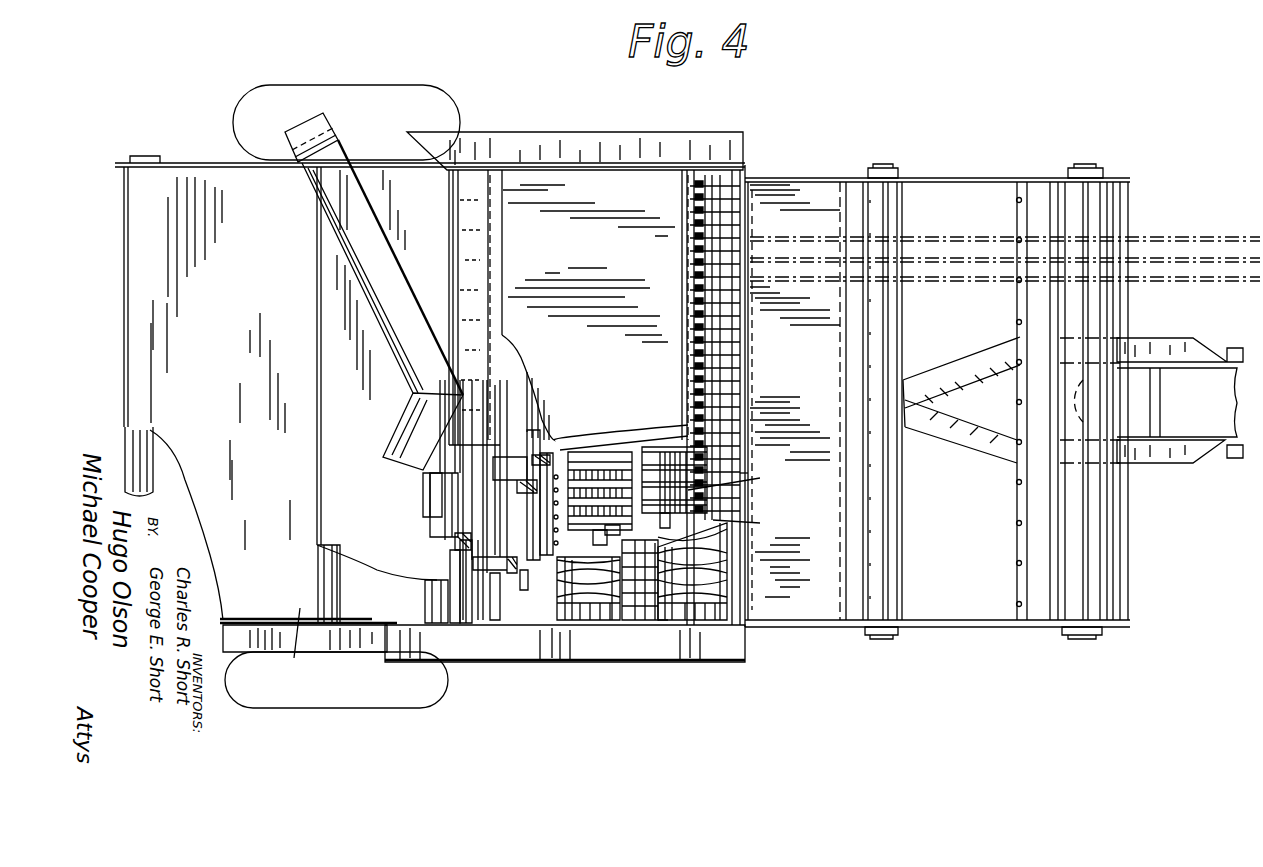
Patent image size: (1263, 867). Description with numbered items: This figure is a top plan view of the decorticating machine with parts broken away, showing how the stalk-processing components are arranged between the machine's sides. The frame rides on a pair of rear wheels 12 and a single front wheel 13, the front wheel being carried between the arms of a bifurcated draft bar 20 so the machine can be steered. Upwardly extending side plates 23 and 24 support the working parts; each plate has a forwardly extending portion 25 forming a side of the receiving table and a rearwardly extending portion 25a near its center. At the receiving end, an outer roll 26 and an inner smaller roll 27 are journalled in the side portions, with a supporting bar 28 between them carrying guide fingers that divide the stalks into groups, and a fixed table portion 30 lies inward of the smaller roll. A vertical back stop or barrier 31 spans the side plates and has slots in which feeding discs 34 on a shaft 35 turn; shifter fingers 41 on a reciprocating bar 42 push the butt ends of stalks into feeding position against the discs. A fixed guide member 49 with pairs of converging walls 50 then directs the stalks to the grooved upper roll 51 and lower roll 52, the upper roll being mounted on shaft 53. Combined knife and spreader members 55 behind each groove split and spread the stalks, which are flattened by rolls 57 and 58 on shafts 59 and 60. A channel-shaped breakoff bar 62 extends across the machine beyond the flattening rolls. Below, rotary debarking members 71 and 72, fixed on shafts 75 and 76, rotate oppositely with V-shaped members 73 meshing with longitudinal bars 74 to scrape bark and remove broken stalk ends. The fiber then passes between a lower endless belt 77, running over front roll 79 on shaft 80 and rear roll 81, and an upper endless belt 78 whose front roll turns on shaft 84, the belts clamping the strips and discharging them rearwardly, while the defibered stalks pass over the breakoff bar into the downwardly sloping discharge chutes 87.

The rear wheels 12 is at (393, 105).
The front wheel 13 is at (1212, 438).
The bifurcated draft bar 20 is at (1183, 346).
The side frame member or plate 23 is at (722, 625).
The side frame member or plate 24 is at (703, 170).
The forwardly extending portion 25 is at (958, 178).
The rearwardly extending portion 25a is at (188, 162).
The outer roll 26 is at (1100, 514).
The inner smaller roll 27 is at (885, 528).
The supporting bar 28 is at (1017, 578).
The fixed table portion 30 is at (822, 623).
The back stop or barrier 31 is at (745, 473).
The feeding discs 34 is at (745, 497).
The shaft 35 is at (745, 515).
The shifter fingers 41 is at (745, 327).
The bar 42 is at (745, 220).
The fixed guide member 49 is at (650, 623).
The converging walls 50 is at (632, 600).
The upper roll 51 is at (586, 470).
The lower roll 52 is at (600, 610).
The shaft 53 is at (615, 478).
The combined knife and spreader members 55 is at (547, 558).
The roll 57 is at (507, 372).
The roll 58 is at (552, 453).
The shaft 59 is at (510, 455).
The shaft 60 is at (524, 570).
The breakoff bar 62 is at (480, 180).
The rotary debarking member 71 is at (432, 522).
The rotary debarking member 72 is at (480, 603).
The V-shaped members 73 is at (424, 492).
The bars 74 is at (515, 570).
The shaft 75 is at (455, 540).
The shaft 76 is at (498, 606).
The lower endless belt 77 is at (300, 658).
The upper endless belt 78 is at (346, 492).
The front roll 79 is at (455, 610).
The shaft 80 is at (466, 623).
The rear roll 81 is at (320, 576).
The shaft 84 is at (427, 594).
The discharge chutes 87 is at (330, 125).